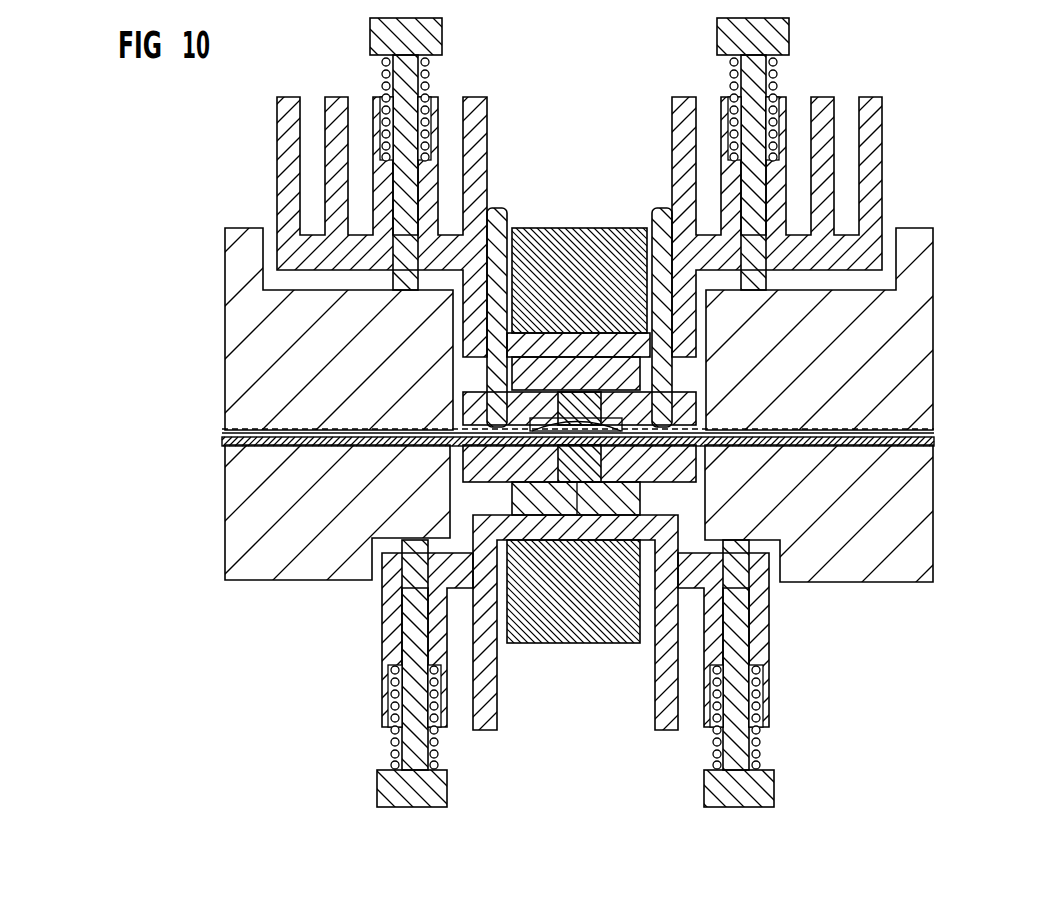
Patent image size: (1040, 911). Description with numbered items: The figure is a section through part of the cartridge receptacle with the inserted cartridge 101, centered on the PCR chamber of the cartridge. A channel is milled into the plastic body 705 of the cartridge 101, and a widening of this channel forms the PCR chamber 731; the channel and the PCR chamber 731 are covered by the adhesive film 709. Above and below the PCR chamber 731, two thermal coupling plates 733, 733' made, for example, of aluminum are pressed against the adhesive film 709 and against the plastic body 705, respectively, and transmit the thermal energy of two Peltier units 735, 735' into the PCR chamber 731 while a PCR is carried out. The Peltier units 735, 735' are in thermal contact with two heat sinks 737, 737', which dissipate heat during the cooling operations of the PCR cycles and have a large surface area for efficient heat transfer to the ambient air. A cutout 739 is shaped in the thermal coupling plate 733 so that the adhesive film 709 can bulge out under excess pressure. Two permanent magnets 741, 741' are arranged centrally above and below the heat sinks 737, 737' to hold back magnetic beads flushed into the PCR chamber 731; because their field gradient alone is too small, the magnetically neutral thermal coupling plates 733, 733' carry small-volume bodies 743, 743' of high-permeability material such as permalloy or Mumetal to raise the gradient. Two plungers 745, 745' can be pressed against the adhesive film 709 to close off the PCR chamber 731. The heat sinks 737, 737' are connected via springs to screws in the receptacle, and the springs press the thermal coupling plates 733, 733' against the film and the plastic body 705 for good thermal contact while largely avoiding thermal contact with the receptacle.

The cartridge 101 is at (946, 432).
The plastic body 705 is at (933, 442).
The adhesive film 709 is at (258, 430).
The PCR chamber 731 is at (517, 491).
The thermal coupling plate 733 is at (737, 389).
The thermal coupling plate 733' is at (737, 489).
The Peltier unit 735 is at (585, 266).
The Peltier unit 735' is at (575, 617).
The heat sink 737 is at (415, 218).
The heat sink 737' is at (489, 698).
The cutout 739 is at (620, 432).
The permanent magnet 741 is at (579, 254).
The permanent magnet 741' is at (573, 623).
The small-volume body 743 is at (576, 285).
The small-volume body 743' is at (571, 594).
The plunger 745 is at (511, 287).
The plunger 745' is at (654, 270).